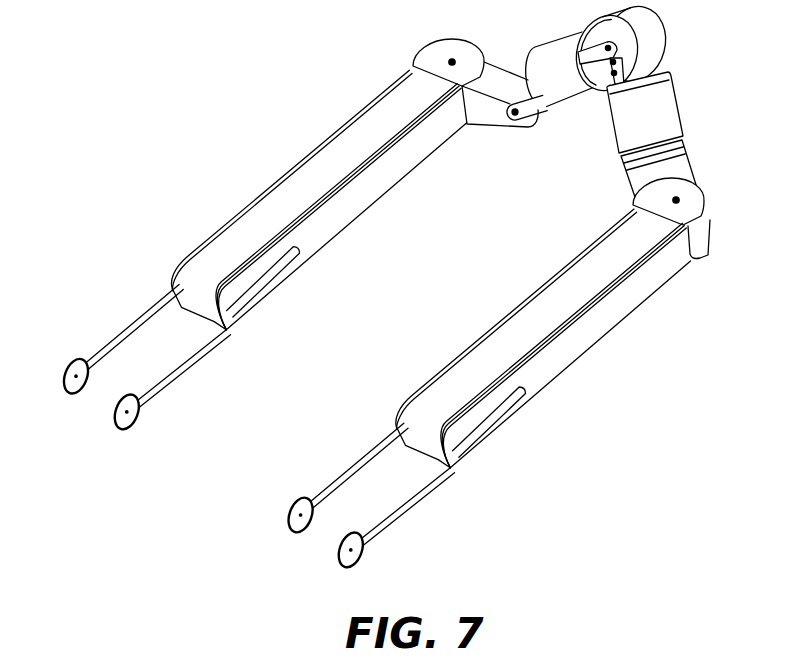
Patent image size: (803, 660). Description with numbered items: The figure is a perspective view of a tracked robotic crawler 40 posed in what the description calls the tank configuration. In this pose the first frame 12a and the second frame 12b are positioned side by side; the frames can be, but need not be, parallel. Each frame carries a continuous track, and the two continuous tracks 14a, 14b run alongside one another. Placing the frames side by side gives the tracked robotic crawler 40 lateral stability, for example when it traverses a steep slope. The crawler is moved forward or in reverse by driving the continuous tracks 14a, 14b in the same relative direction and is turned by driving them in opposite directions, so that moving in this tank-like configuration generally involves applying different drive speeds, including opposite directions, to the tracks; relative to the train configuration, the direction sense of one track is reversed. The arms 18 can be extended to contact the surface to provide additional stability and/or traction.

The tracked robotic crawler 40 is at (384, 285).
The continuous track 14a is at (319, 222).
The continuous track 14b is at (532, 346).
The first frame 12a is at (310, 240).
The second frame 12b is at (530, 404).
The arms 18 is at (140, 318).